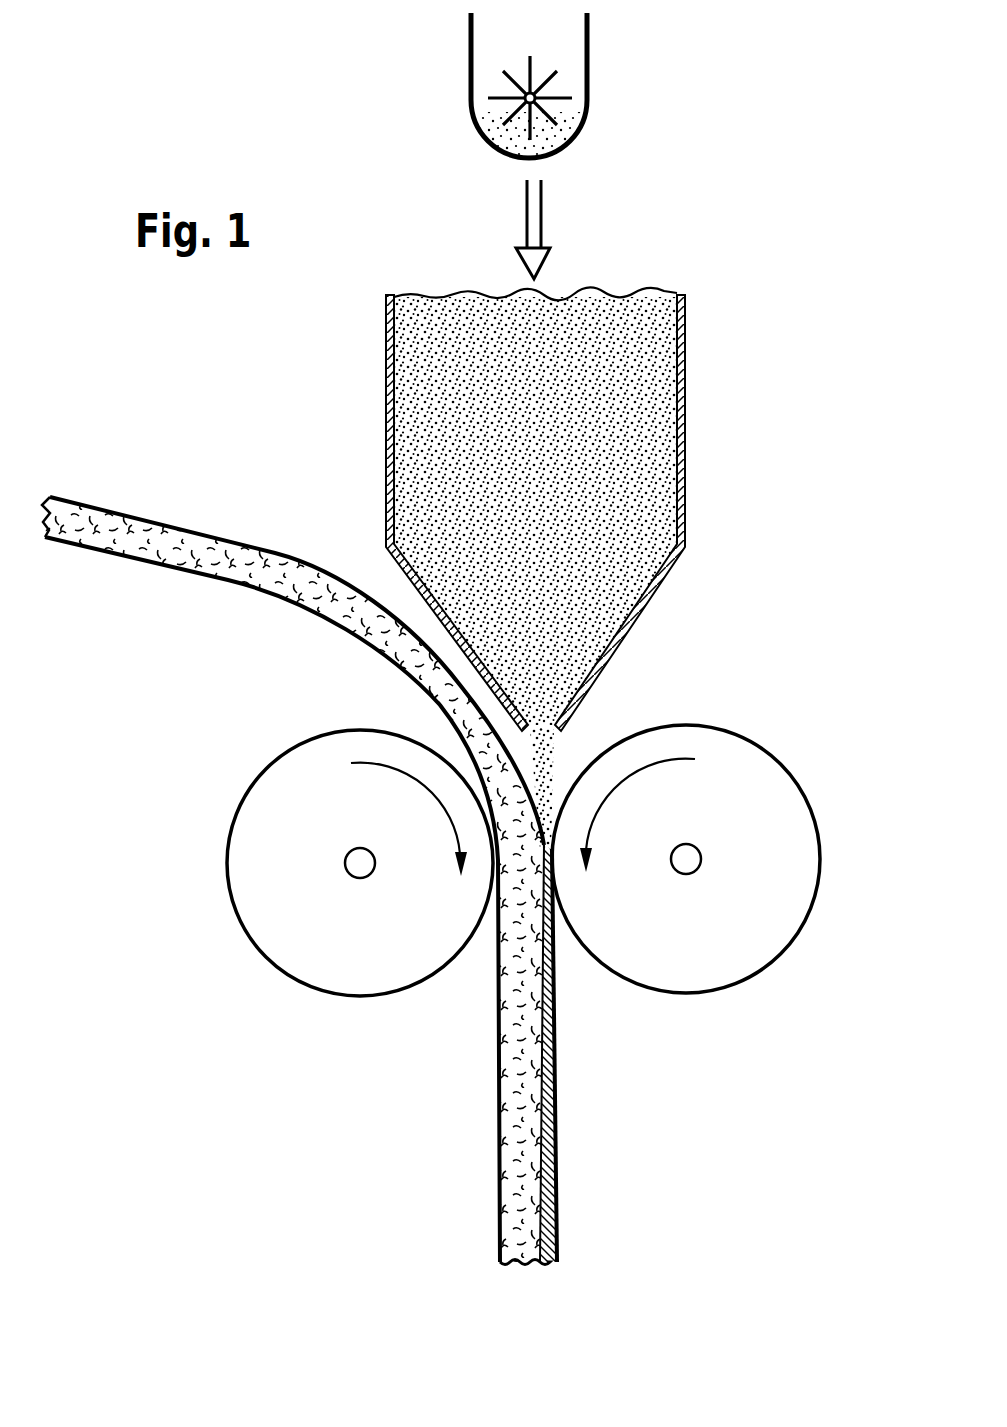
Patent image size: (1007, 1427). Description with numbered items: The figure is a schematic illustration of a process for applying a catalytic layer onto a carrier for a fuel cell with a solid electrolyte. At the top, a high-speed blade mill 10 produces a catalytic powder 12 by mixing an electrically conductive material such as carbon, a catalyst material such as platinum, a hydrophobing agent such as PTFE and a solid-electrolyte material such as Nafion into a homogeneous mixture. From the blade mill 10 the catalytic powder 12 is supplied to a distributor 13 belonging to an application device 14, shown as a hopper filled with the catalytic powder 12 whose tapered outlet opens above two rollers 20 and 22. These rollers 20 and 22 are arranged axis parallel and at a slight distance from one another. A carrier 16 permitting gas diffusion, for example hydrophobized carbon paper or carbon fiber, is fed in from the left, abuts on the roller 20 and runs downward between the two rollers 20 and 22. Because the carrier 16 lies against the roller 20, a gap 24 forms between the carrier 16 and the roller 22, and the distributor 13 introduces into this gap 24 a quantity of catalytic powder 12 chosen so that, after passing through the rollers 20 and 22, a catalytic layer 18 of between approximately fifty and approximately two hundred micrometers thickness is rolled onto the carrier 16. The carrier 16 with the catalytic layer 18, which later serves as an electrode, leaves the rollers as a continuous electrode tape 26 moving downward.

The blade mill 10 is at (599, 59).
The catalytic powder 12 is at (548, 135).
The distributor 13 is at (694, 366).
The application device 14 is at (706, 509).
The carrier 16 is at (160, 556).
The catalytic layer 18 is at (558, 1130).
The roller 20 is at (243, 877).
The roller 22 is at (791, 865).
The gap 24 is at (568, 774).
The electrode tape 26 is at (528, 1276).